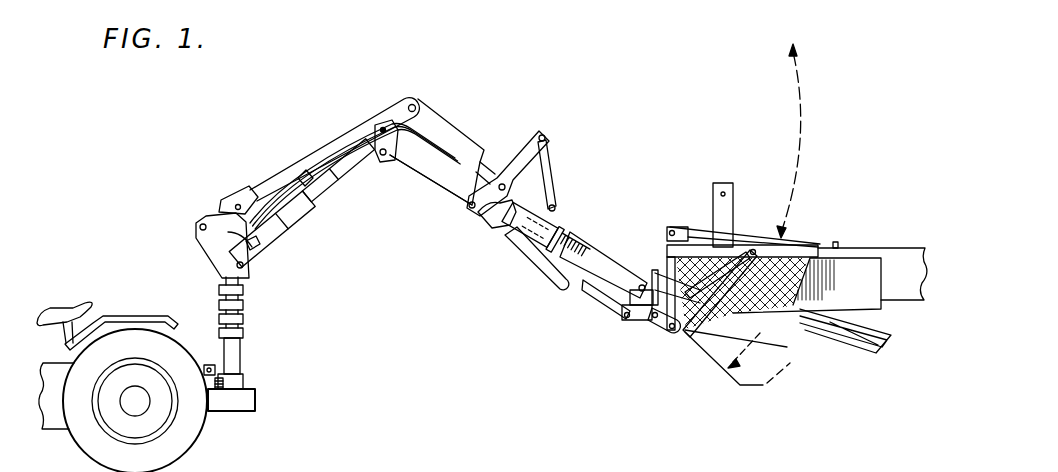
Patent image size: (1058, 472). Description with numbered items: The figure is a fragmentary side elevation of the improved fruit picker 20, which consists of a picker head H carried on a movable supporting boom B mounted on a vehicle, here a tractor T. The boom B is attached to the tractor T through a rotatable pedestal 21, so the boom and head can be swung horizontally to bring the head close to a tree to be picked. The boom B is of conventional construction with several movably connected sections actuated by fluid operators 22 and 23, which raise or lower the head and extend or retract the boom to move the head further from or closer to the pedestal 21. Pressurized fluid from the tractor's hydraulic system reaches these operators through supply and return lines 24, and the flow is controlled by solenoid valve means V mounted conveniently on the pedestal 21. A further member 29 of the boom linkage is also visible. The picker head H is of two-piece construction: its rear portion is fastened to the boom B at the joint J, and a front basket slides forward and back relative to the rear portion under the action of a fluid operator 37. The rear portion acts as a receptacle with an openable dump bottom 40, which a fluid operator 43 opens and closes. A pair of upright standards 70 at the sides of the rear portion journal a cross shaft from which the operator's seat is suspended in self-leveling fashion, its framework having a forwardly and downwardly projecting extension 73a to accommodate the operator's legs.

The tractor T is at (148, 309).
The solenoid valve means V is at (243, 312).
The rotatable pedestal 21 is at (233, 357).
The fluid operator 22 is at (283, 242).
The fluid operator 23 is at (452, 130).
The fluid supply and return lines 24 is at (305, 190).
The supporting boom B is at (421, 180).
The hydraulic cylinder 29 is at (572, 281).
The joint J is at (657, 262).
The fruit picker 20 is at (685, 165).
The upright standards 70 is at (717, 210).
The fluid operator 37 is at (743, 232).
The fluid operator 43 is at (722, 274).
The openable dump bottom 40 is at (788, 327).
The extension 73a is at (865, 340).
The picker head H is at (853, 236).